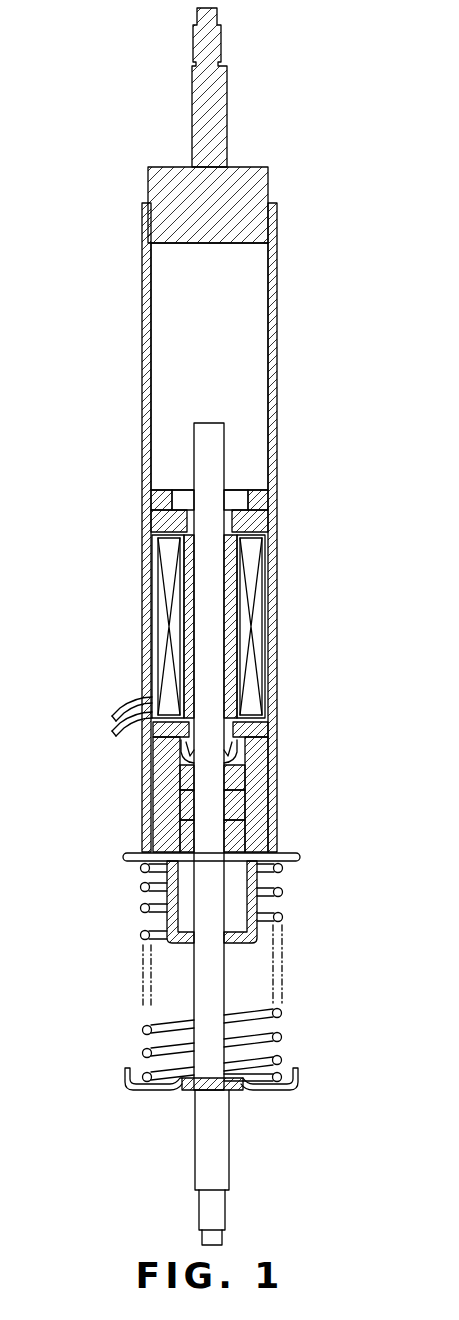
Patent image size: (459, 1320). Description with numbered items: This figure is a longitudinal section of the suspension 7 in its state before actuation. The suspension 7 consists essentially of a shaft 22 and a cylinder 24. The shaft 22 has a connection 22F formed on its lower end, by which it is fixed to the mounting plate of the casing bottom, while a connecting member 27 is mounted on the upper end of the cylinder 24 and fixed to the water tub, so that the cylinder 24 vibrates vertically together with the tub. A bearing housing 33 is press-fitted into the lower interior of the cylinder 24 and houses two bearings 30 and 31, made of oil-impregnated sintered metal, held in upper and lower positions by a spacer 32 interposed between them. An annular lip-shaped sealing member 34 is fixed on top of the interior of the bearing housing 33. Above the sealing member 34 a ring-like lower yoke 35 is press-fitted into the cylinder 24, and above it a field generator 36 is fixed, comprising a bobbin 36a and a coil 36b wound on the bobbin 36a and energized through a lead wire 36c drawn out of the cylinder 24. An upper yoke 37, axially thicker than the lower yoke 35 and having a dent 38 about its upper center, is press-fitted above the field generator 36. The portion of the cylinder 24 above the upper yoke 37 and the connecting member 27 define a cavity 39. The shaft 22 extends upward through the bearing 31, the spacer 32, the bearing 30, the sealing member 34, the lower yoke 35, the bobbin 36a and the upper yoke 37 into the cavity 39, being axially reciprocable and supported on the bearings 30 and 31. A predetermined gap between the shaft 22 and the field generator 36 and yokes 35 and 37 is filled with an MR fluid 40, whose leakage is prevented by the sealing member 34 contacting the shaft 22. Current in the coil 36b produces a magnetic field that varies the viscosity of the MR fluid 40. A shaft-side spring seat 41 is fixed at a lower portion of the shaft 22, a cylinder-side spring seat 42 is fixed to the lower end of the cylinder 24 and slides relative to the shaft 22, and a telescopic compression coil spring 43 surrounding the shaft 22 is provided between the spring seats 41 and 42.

The suspension 7 is at (98, 212).
The connecting member 27 is at (192, 113).
The cylinder 24 is at (142, 407).
The cavity 39 is at (209, 366).
The shaft 22 is at (194, 988).
The dent 38 is at (236, 494).
The upper yoke 37 is at (265, 510).
The field generator 36 is at (274, 657).
The bobbin 36a is at (153, 628).
The coil 36b is at (165, 643).
The lead wire 36c is at (116, 702).
The MR fluid 40 is at (236, 608).
The lower yoke 35 is at (265, 727).
The bearing housing 33 is at (265, 800).
The sealing member 34 is at (236, 755).
The bearing 30 is at (178, 775).
The spacer 32 is at (180, 805).
The bearing 31 is at (180, 832).
The cylinder-side spring seat 42 is at (150, 857).
The coil spring 43 is at (165, 928).
The shaft-side spring seat 41 is at (130, 1075).
The connection 22F is at (199, 1212).